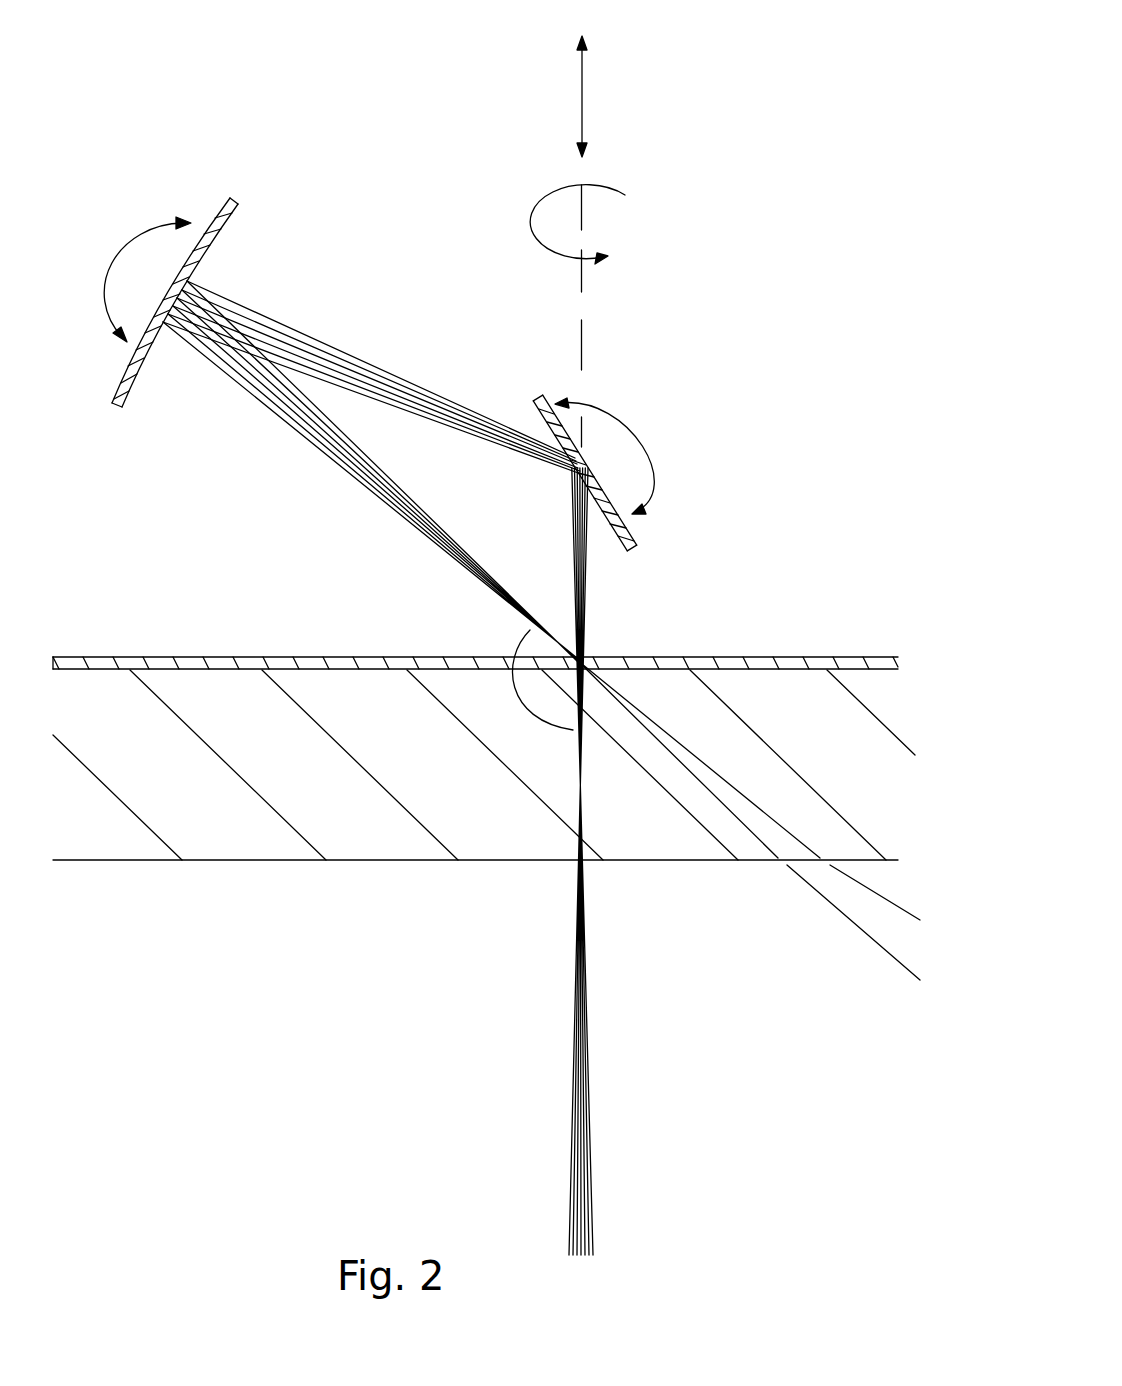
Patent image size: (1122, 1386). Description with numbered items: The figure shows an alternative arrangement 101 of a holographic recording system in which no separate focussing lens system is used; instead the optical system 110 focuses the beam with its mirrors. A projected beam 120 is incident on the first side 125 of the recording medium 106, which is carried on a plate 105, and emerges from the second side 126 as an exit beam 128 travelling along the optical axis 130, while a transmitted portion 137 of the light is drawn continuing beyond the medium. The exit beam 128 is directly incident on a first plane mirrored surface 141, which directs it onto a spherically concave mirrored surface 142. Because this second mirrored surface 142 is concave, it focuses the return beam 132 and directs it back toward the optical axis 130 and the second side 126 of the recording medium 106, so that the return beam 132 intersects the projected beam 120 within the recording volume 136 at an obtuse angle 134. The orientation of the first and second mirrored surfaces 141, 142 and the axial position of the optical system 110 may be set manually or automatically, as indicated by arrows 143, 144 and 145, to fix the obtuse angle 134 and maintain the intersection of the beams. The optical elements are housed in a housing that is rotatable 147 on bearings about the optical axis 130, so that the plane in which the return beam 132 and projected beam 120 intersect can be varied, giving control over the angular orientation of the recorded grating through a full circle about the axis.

The alternative arrangement 101 is at (186, 1125).
The plate 105 is at (342, 815).
The recording medium 106 is at (337, 665).
The optical system 110 is at (151, 70).
The projected beam 120 is at (595, 1047).
The first side 125 is at (216, 888).
The second side 126 is at (215, 890).
The exit beam 128 is at (573, 573).
The optical axis 130 is at (582, 277).
The return beam 132 is at (405, 522).
The obtuse angle 134 is at (520, 647).
The recording volume 136 is at (590, 654).
The transmitted beam 137 is at (860, 930).
The first plane mirrored surface 141 is at (624, 523).
The spherically concave mirrored surface 142 is at (222, 237).
The arrow 143 is at (647, 443).
The arrow 144 is at (140, 236).
The arrow 145 is at (582, 109).
The rotatable 147 is at (513, 220).